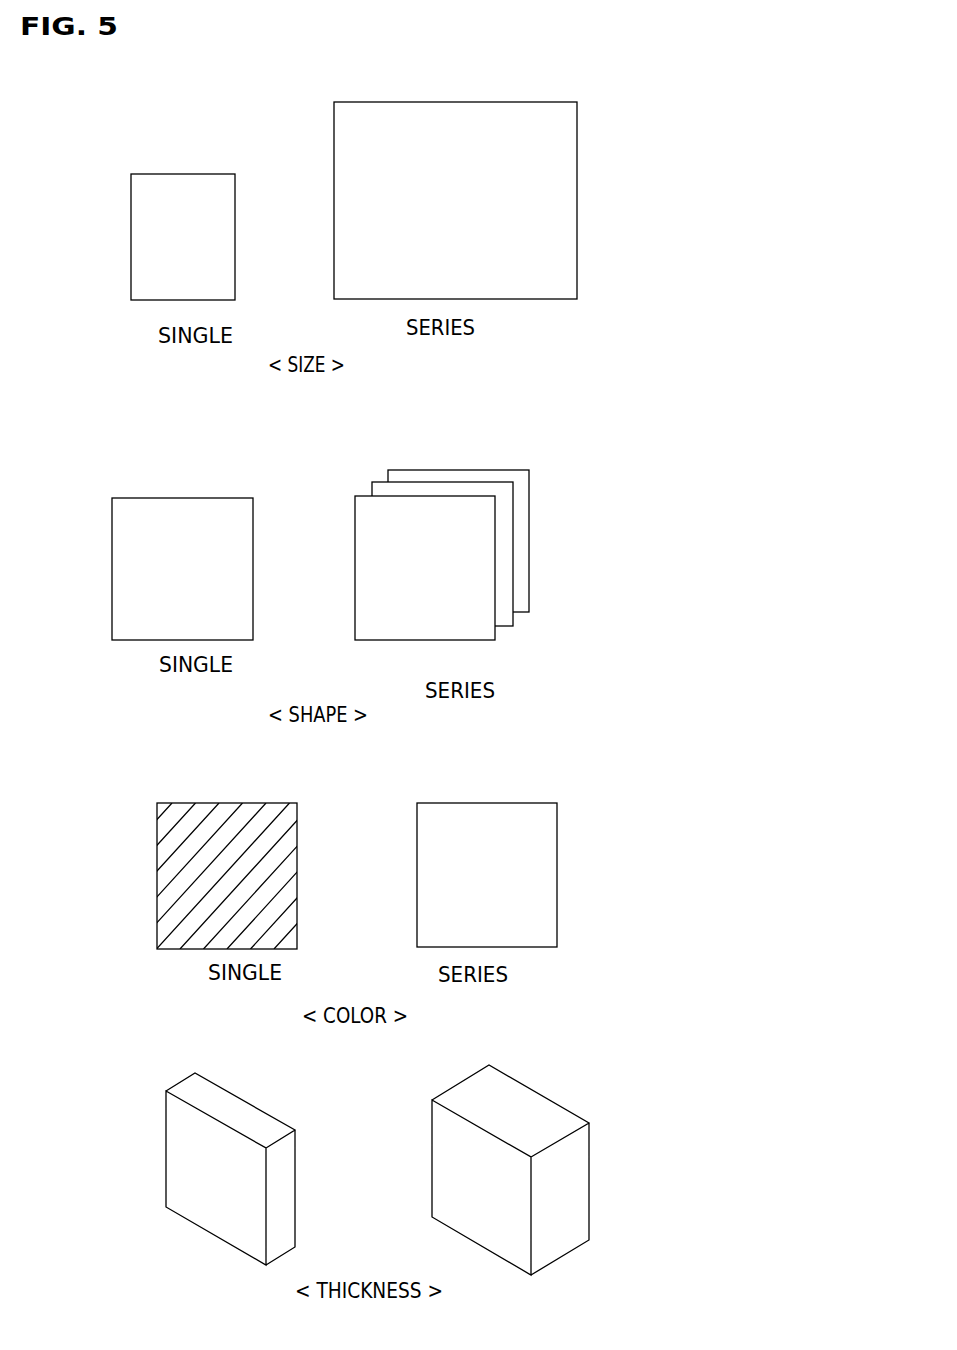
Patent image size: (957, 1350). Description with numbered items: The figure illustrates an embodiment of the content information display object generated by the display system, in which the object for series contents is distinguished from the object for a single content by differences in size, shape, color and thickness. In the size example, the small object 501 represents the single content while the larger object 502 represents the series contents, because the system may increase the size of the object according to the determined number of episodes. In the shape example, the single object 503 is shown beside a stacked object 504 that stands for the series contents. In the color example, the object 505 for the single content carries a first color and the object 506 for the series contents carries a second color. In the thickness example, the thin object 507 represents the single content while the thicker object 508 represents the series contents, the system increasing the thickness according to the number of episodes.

The single item size indicator 501 is at (188, 190).
The series item size indicator 502 is at (559, 193).
The single item shape indicator 503 is at (187, 510).
The series item shape indicator (stacked) 504 is at (527, 547).
The single item color indicator (color 1) 505 is at (157, 877).
The series item color indicator (color 2) 506 is at (547, 873).
The single item thickness indicator (thin) 507 is at (185, 1161).
The series item thickness indicator (thick) 508 is at (578, 1183).